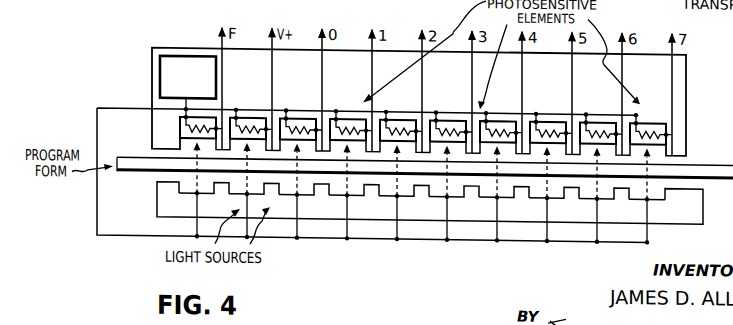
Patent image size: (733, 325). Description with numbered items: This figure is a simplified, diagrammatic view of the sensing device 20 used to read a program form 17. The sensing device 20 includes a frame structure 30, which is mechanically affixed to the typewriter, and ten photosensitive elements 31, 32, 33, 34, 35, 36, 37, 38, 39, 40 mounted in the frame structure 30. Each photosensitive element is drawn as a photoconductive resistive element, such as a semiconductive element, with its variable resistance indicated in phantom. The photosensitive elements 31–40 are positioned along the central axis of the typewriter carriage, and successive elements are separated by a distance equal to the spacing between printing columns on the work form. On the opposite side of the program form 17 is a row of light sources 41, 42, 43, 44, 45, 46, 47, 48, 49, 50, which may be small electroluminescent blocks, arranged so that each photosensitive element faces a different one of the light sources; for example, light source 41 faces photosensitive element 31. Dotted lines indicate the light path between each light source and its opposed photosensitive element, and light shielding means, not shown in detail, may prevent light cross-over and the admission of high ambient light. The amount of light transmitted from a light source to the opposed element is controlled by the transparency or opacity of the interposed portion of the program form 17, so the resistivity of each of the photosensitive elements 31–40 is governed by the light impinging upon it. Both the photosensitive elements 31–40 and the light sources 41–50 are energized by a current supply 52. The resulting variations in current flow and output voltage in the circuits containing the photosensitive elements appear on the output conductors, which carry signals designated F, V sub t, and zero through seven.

The program form 17 is at (118, 158).
The sensing device 20 is at (88, 201).
The frame structure 30 is at (152, 72).
The photosensitive element 31 is at (200, 113).
The photosensitive element 32 is at (238, 113).
The photosensitive element 33 is at (285, 113).
The photosensitive element 34 is at (333, 113).
The photosensitive element 35 is at (385, 113).
The photosensitive element 36 is at (435, 113).
The photosensitive element 37 is at (485, 113).
The photosensitive element 38 is at (533, 113).
The photosensitive element 39 is at (585, 113).
The photosensitive element 40 is at (635, 113).
The light source 41 is at (187, 195).
The light source 42 is at (242, 195).
The light source 43 is at (266, 193).
The light source 44 is at (318, 193).
The light source 45 is at (369, 193).
The light source 46 is at (419, 193).
The light source 47 is at (471, 193).
The light source 48 is at (519, 193).
The light source 49 is at (571, 193).
The light source 50 is at (623, 193).
The current supply 52 is at (172, 47).